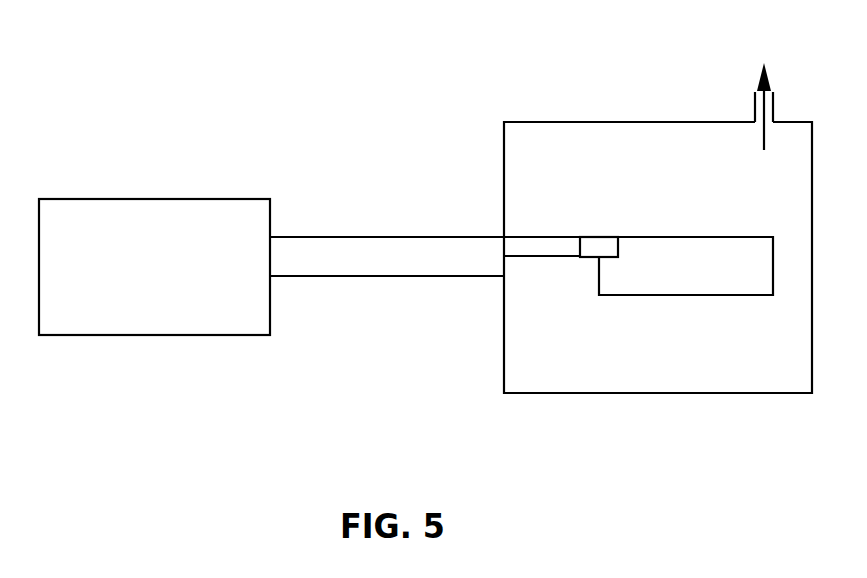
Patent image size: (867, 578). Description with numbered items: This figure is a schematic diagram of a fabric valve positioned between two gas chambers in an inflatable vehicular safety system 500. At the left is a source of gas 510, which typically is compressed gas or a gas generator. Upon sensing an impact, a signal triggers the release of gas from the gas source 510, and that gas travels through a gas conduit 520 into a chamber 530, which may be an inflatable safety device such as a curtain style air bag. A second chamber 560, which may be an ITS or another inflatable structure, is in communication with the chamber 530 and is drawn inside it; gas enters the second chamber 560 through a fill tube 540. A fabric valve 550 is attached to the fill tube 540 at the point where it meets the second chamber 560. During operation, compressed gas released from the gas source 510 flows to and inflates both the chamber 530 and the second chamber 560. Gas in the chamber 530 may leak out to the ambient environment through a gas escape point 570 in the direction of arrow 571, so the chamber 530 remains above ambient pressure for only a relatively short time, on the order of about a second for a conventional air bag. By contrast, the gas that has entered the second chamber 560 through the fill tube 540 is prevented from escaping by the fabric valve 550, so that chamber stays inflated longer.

The inflatable vehicular safety system 500 is at (178, 140).
The source of gas 510 is at (135, 336).
The gas conduit 520 is at (352, 237).
The chamber 530 is at (560, 122).
The fill tube 540 is at (553, 237).
The fabric valve 550 is at (592, 257).
The second chamber 560 is at (689, 296).
The gas escape point 570 is at (752, 101).
The arrow 571 is at (760, 128).